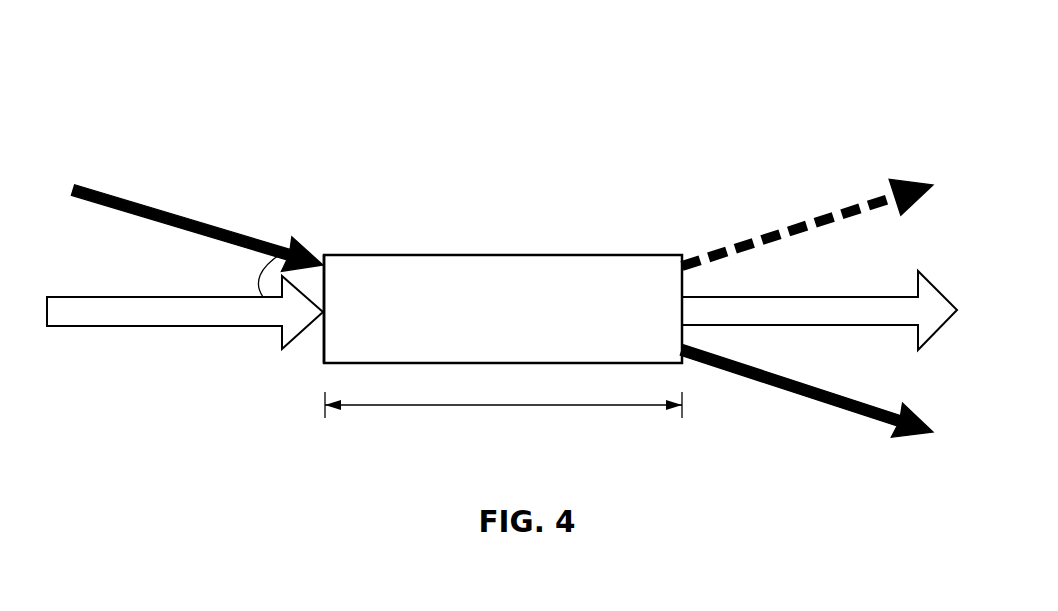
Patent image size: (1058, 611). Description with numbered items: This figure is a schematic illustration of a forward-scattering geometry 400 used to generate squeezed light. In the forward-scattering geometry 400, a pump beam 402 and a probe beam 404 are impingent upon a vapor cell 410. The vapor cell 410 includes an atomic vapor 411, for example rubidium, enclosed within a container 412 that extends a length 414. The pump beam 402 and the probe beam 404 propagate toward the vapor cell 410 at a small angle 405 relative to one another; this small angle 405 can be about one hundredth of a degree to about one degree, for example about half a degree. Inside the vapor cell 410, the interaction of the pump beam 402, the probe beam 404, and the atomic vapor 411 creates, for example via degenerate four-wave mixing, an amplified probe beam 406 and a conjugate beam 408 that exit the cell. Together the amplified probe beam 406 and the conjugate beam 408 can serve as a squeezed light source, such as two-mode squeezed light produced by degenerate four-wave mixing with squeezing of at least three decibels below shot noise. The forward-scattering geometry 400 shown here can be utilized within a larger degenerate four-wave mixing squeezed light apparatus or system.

The forward-scattering geometry 400 is at (872, 78).
The pump beam 402 is at (92, 297).
The probe beam 404 is at (127, 198).
The small angle 405 is at (230, 277).
The amplified probe beam 406 is at (827, 390).
The conjugate beam 408 is at (845, 203).
The vapor cell 410 is at (520, 245).
The atomic vapor 411 is at (468, 313).
The container 412 is at (353, 255).
The length 414 is at (503, 413).